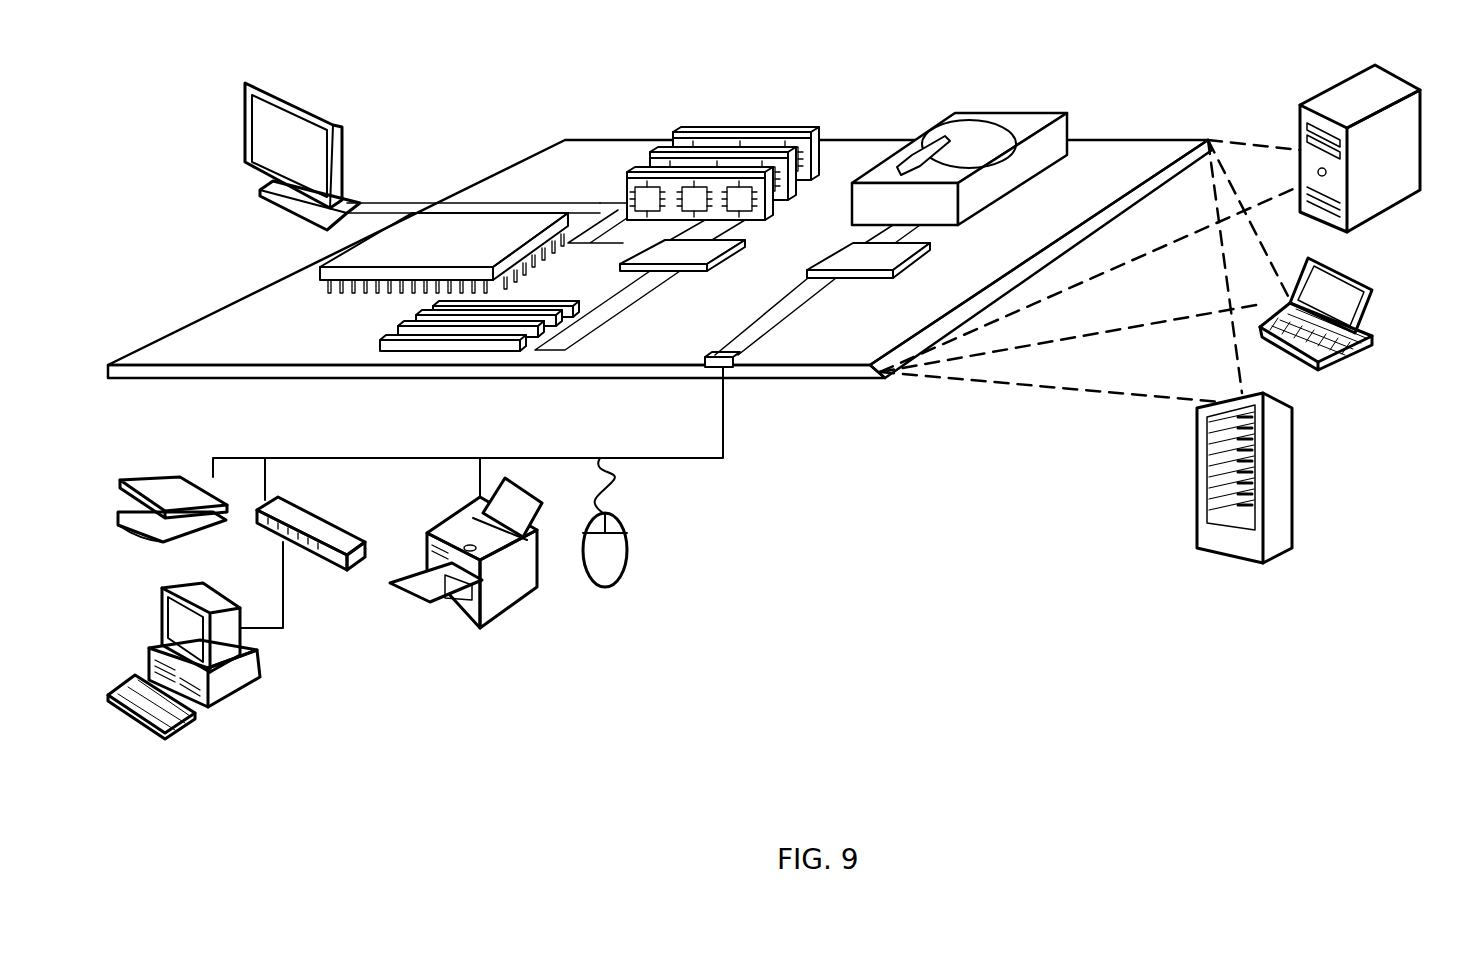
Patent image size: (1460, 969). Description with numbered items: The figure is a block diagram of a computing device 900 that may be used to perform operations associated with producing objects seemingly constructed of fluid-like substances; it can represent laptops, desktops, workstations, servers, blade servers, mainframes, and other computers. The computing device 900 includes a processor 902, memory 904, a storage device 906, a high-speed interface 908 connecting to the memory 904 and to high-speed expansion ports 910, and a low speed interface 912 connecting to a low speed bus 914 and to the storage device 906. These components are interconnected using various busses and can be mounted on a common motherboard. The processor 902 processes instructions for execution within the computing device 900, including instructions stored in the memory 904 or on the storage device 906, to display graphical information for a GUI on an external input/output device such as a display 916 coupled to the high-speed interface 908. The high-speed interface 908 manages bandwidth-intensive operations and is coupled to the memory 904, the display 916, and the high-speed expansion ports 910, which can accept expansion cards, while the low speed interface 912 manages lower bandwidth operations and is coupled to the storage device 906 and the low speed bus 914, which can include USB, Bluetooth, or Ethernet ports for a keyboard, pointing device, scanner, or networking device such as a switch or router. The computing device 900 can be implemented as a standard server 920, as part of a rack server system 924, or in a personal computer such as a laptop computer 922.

The computing device 900 is at (460, 106).
The processor 902 is at (330, 270).
The memory 904 is at (685, 132).
The storage device 906 is at (948, 118).
The high-speed interface 908 is at (655, 252).
The high-speed expansion ports 910 is at (405, 340).
The low speed interface 912 is at (850, 257).
The low speed bus 914 is at (738, 367).
The display 916 is at (248, 84).
The standard server 920 is at (1298, 122).
The laptop computer 922 is at (1372, 288).
The rack server system 924 is at (1197, 505).